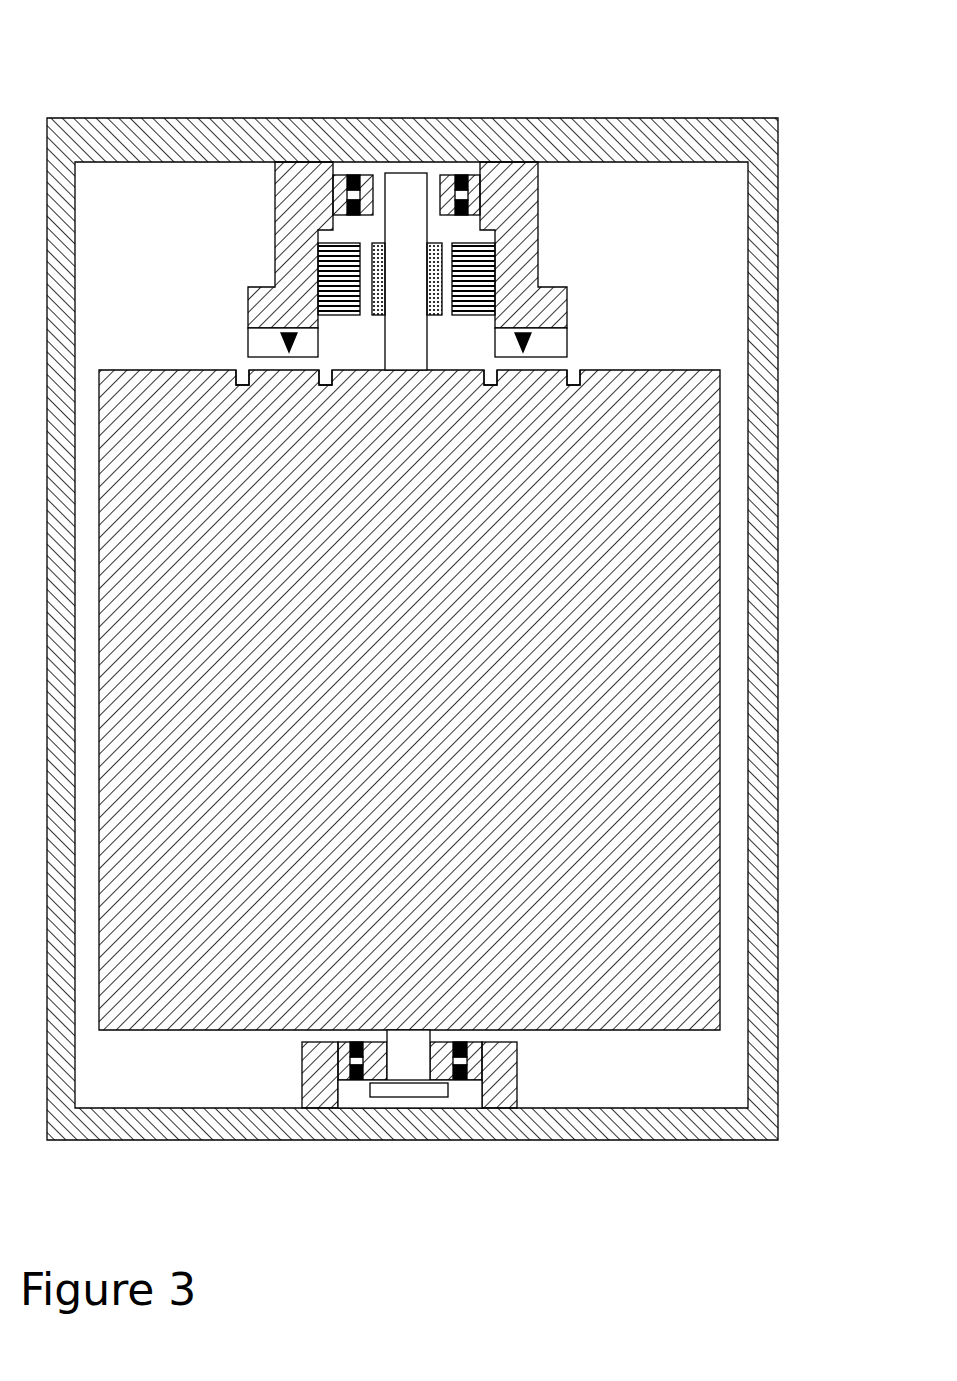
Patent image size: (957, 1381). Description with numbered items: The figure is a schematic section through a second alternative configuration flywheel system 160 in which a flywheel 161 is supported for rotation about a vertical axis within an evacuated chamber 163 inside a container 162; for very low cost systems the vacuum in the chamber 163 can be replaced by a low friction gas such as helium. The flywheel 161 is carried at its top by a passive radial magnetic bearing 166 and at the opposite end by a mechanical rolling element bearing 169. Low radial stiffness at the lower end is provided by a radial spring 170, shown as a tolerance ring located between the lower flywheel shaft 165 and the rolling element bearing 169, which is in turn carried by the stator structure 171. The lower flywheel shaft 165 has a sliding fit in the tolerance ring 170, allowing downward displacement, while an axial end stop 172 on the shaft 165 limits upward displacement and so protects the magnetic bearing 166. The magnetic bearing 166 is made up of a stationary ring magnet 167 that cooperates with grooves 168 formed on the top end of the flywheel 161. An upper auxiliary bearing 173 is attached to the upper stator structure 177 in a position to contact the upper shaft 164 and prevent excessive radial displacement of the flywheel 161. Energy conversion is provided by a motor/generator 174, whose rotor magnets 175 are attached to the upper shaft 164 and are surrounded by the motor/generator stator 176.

The flywheel system 160 is at (126, 36).
The flywheel 161 is at (722, 757).
The container 162 is at (780, 864).
The evacuated chamber 163 is at (728, 1060).
The upper shaft 164 is at (403, 175).
The lower flywheel shaft 165 is at (408, 1060).
The passive radial magnetic bearing 166 is at (584, 347).
The stationary ring magnet 167 is at (248, 345).
The grooves 168 is at (318, 389).
The mechanical rolling element bearing 169 is at (472, 1080).
The radial spring 170 is at (379, 1076).
The stator structure 171 is at (518, 1068).
The axial end stop 172 is at (432, 1090).
The upper auxiliary bearing 173 is at (447, 178).
The motor/generator 174 is at (368, 332).
The rotor magnets 175 is at (437, 320).
The motor/generator stator 176 is at (482, 320).
The upper stator structure 177 is at (538, 195).